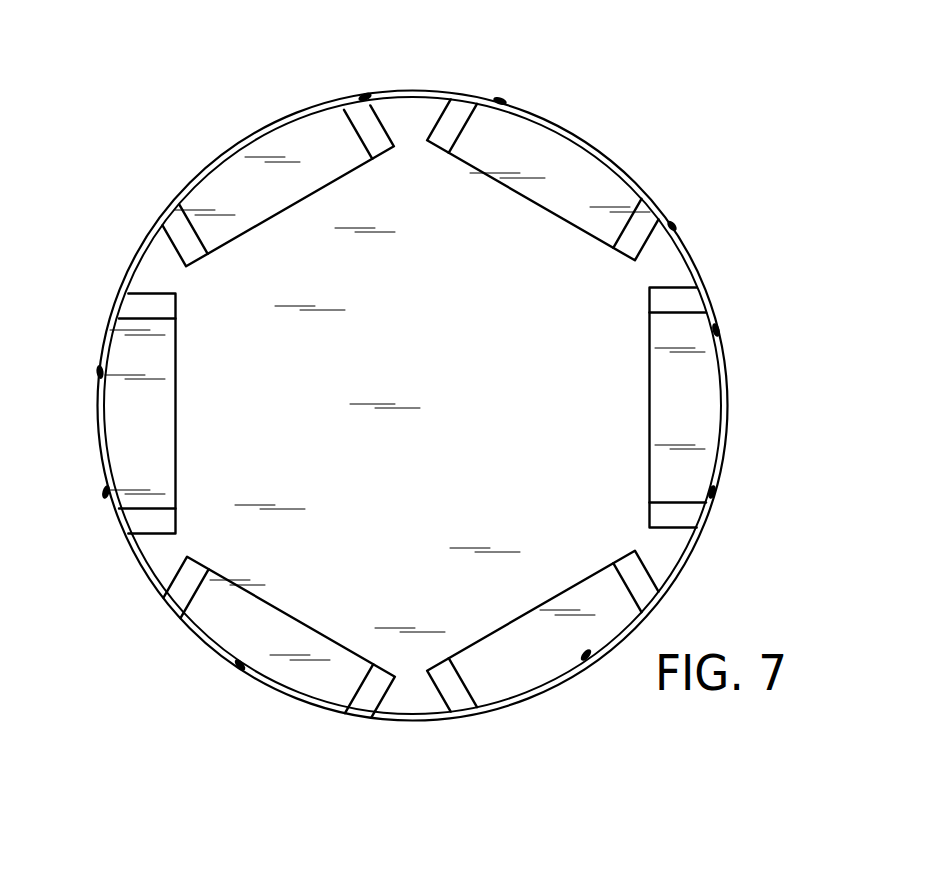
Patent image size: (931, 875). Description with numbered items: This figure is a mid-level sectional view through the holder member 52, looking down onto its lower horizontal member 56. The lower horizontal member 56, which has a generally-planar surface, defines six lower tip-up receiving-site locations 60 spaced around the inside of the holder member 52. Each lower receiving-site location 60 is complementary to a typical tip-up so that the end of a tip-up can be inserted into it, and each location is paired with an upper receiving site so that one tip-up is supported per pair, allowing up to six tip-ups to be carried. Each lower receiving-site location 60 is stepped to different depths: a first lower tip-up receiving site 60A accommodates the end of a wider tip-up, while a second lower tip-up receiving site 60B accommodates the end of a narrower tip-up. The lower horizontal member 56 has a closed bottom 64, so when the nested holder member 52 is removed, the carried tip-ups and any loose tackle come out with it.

The holder member 52 is at (120, 577).
The lower horizontal member 56 is at (227, 305).
The lower tip-up receiving-site location 60 is at (466, 408).
The first lower tip-up receiving site 60A is at (678, 300).
The second lower tip-up receiving site 60B is at (687, 355).
The closed bottom 64 is at (615, 302).